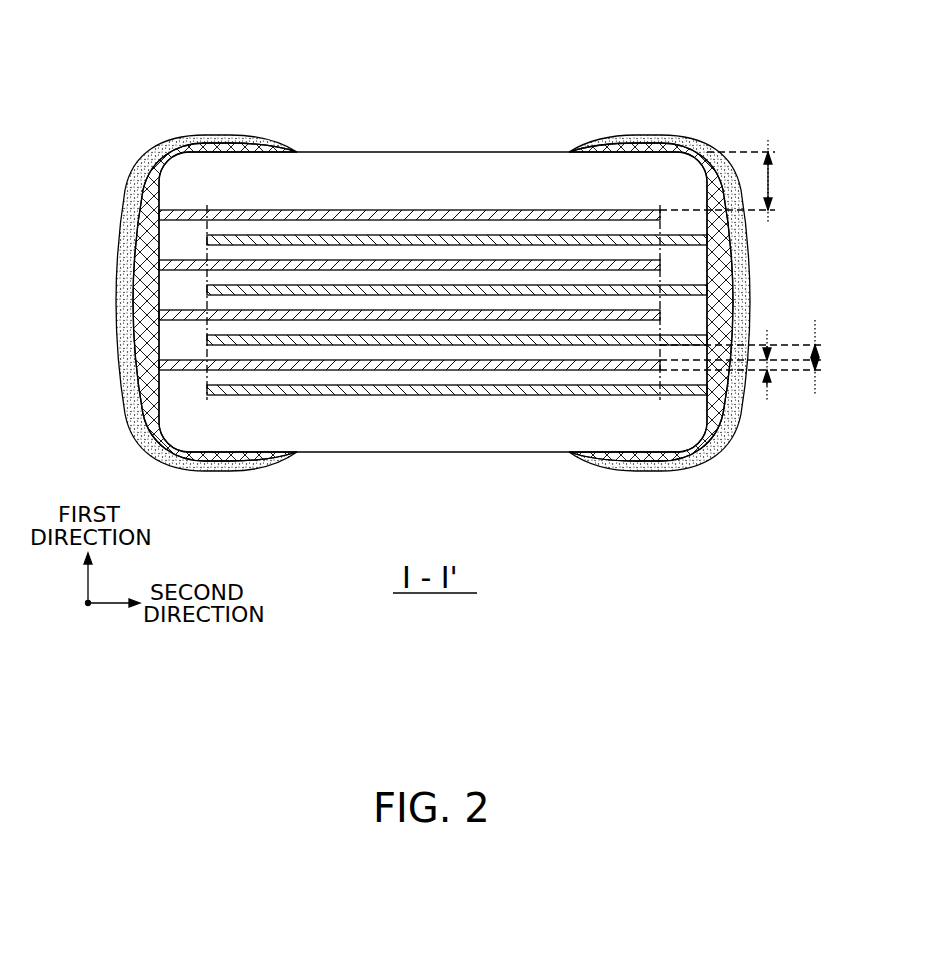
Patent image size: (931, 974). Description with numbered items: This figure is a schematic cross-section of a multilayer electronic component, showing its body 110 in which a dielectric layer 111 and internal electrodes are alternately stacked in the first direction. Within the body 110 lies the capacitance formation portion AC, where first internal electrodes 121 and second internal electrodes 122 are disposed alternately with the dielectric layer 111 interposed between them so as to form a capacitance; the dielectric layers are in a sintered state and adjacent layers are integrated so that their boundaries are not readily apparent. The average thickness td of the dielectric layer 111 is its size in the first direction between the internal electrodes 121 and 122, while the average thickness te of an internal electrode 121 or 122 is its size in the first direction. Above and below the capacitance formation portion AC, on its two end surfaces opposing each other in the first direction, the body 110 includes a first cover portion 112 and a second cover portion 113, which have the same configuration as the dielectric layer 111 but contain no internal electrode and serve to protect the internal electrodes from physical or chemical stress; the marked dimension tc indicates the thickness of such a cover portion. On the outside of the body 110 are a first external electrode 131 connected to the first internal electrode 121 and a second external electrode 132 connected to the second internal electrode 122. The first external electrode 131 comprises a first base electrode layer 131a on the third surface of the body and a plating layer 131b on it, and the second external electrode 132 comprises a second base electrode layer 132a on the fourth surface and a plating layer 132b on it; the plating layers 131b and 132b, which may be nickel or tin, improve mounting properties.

The body 110 is at (537, 152).
The dielectric layer 111 is at (453, 230).
The first cover portion 112 is at (300, 178).
The second cover portion 113 is at (388, 440).
The first internal electrode 121 is at (348, 212).
The second internal electrode 122 is at (398, 237).
The first external electrode 131 is at (163, 246).
The first base electrode layer 131a is at (118, 282).
The plating layer 131b is at (116, 308).
The second external electrode 132 is at (699, 246).
The second base electrode layer 132a is at (748, 253).
The plating layer 132b is at (752, 290).
The capacitance formation portion AC is at (520, 398).
The cover thickness tc is at (726, 181).
The average thickness of the dielectric layer td is at (749, 357).
The average thickness of the internal electrode te is at (742, 365).